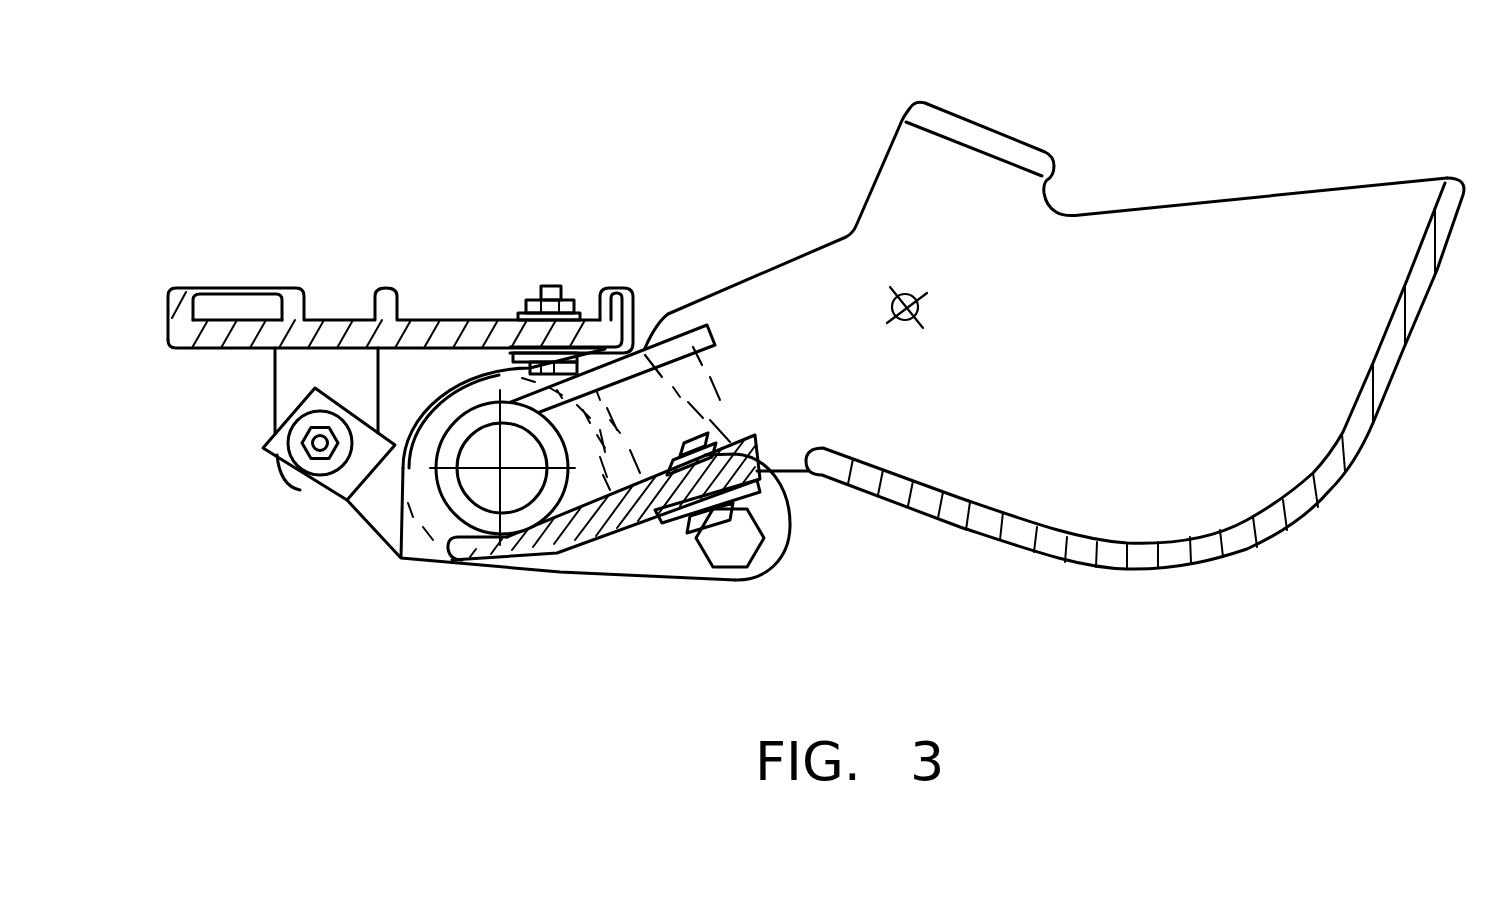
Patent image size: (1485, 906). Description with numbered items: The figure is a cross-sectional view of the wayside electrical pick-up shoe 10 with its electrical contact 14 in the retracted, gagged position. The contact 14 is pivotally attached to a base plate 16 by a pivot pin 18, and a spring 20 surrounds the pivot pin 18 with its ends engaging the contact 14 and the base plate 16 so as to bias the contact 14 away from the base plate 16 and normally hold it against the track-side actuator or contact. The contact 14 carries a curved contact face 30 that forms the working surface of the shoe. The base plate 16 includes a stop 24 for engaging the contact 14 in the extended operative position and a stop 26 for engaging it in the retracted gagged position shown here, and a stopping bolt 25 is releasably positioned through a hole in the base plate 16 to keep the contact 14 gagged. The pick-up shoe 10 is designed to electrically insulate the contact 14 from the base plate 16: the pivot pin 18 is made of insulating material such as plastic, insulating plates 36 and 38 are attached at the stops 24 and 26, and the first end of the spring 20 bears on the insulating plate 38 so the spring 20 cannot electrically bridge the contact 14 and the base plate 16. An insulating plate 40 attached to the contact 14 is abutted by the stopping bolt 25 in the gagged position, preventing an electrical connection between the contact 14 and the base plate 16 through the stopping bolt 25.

The pick-up shoe 10 is at (820, 387).
The electrical contact 14 is at (1227, 200).
The base plate 16 is at (345, 322).
The pivot pin 18 is at (480, 487).
The spring 20 is at (697, 312).
The stop 24 is at (290, 483).
The stopping bolt 25 is at (740, 547).
The stop 26 is at (600, 330).
The curved contact face 30 is at (1383, 378).
The insulating plate 36 is at (280, 427).
The insulating plate 38 is at (643, 310).
The insulating plate 40 is at (673, 517).